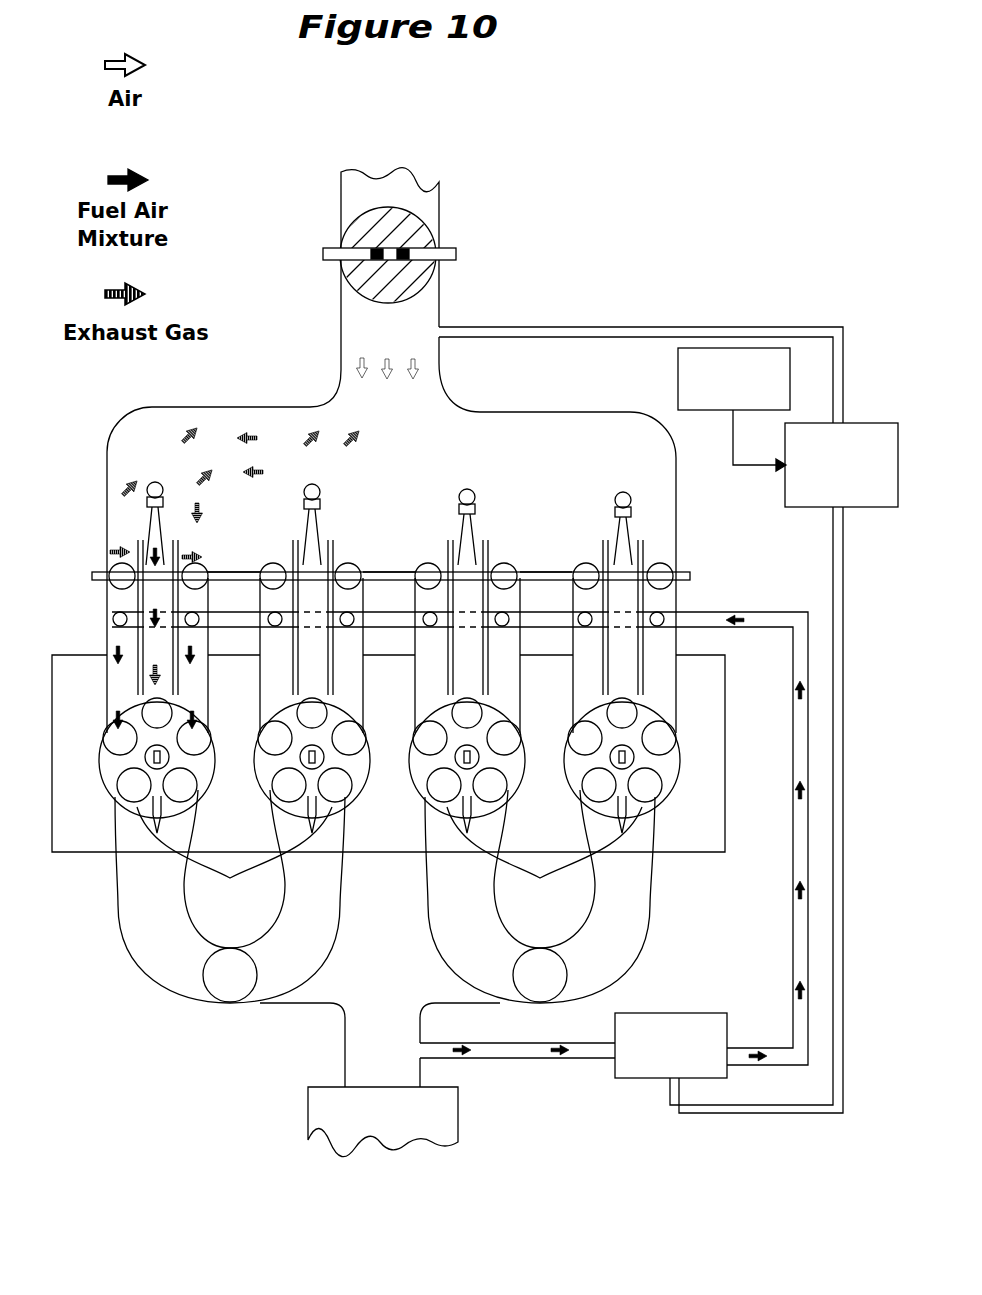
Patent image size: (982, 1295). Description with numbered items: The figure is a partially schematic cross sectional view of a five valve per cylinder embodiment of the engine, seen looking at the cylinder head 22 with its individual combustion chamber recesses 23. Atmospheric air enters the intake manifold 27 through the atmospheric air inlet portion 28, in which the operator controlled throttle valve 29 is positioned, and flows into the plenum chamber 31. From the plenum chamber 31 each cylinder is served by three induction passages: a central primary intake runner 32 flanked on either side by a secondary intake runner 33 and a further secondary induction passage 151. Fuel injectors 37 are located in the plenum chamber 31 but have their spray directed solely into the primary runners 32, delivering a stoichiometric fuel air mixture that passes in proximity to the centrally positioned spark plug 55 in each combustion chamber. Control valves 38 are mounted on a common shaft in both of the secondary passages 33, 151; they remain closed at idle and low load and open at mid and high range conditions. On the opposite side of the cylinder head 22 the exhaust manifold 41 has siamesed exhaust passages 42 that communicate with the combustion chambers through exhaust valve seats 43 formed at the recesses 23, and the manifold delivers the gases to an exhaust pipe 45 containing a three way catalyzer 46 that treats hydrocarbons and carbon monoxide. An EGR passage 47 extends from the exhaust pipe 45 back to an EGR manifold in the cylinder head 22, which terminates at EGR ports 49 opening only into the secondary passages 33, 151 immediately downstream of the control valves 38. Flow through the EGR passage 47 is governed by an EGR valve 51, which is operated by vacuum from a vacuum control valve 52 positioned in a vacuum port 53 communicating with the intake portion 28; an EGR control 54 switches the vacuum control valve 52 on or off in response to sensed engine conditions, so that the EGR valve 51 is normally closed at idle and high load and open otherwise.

The cylinder head 22 is at (368, 742).
The combustion chamber recess 23 is at (100, 752).
The intake manifold 27 is at (100, 443).
The atmospheric air inlet portion 28 is at (428, 314).
The throttle valve 29 is at (437, 238).
The plenum chamber 31 is at (318, 398).
The primary intake runner 32 is at (312, 597).
The secondary intake runner 33 is at (116, 595).
The fuel injector 37 is at (164, 491).
The control valve 38 is at (112, 554).
The exhaust manifold 41 is at (112, 899).
The siamesed exhaust passage 42 is at (184, 967).
The exhaust valve seat 43 is at (389, 869).
The exhaust pipe 45 is at (362, 1046).
The three way catalyzer 46 is at (442, 1113).
The EGR passage 47 is at (803, 912).
The EGR port 49 is at (127, 624).
The EGR valve 51 is at (690, 1012).
The vacuum control valve 52 is at (786, 494).
The vacuum port 53 is at (838, 787).
The EGR control 54 is at (680, 362).
The spark plug 55 is at (143, 760).
The further secondary induction passage 151 is at (668, 717).